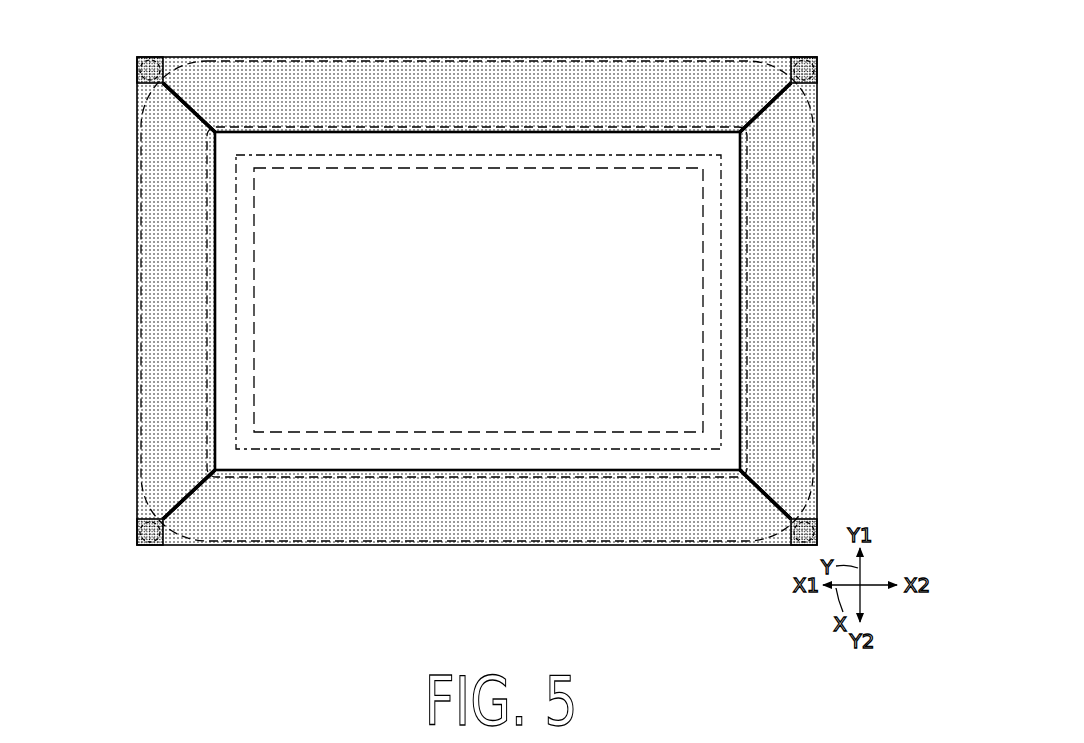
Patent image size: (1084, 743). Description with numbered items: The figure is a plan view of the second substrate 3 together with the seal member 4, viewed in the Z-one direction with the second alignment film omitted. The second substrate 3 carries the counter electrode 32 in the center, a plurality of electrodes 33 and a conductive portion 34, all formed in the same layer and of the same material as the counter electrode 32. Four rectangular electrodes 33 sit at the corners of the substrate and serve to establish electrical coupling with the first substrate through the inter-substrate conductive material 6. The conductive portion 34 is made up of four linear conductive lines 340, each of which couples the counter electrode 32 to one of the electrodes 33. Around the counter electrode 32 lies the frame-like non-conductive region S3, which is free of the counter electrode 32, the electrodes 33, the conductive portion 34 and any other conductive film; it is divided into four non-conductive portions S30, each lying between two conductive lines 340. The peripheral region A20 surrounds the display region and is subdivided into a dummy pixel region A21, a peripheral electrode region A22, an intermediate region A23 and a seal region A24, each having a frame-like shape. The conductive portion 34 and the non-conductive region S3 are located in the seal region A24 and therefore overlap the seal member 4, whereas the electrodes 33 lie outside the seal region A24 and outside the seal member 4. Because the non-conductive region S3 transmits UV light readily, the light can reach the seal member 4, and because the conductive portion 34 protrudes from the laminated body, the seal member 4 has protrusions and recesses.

The second substrate 3 is at (809, 50).
The seal member 4 is at (808, 304).
The inter-substrate conductive material 6 is at (140, 71).
The counter electrode 32 is at (632, 472).
The electrodes 33 is at (161, 57).
The conductive portion 34 is at (210, 104).
The conductive lines 340 is at (188, 108).
The non-conductive region S3 is at (425, 74).
The non-conductive portions S30 is at (437, 58).
The peripheral region A20 is at (641, 431).
The dummy pixel region A21 is at (599, 130).
The peripheral electrode region A22 is at (561, 108).
The intermediate region A23 is at (525, 102).
The seal region A24 is at (503, 148).